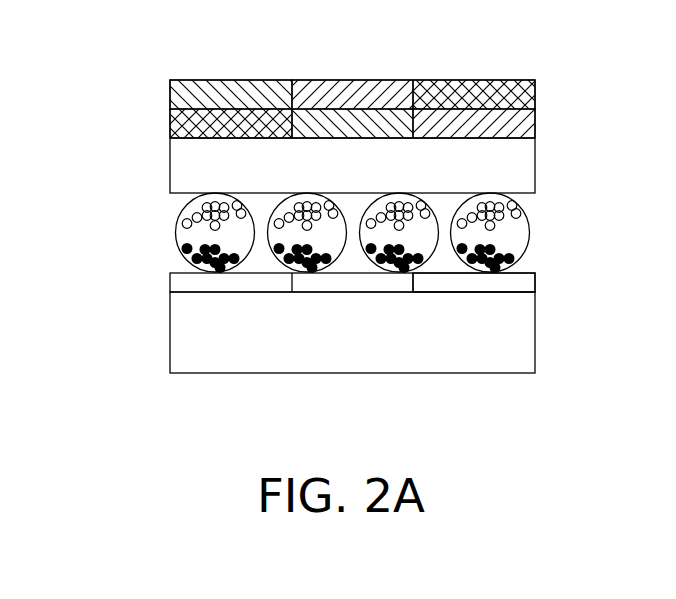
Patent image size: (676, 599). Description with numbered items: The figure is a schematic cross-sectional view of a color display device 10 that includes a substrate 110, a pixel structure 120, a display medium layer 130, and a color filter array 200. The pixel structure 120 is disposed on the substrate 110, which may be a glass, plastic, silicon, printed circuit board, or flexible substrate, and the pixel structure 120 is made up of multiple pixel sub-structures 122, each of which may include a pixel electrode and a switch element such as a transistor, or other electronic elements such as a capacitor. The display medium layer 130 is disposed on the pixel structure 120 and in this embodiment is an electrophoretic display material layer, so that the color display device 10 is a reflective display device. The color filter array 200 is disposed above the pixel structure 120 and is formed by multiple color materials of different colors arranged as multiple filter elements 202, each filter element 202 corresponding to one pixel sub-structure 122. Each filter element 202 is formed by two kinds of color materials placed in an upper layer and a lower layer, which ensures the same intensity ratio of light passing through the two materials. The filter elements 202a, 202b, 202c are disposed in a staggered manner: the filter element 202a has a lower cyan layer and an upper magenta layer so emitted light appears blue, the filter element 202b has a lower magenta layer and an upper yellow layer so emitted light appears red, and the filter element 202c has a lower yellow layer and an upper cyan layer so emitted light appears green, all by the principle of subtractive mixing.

The color display device 10 is at (355, 215).
The substrate 110 is at (208, 333).
The pixel structure 120 is at (356, 289).
The pixel sub-structure 122 is at (517, 282).
The display medium layer 130 is at (176, 226).
The color filter array 200 is at (311, 107).
The filter element 202 is at (357, 80).
The filter element 202a is at (236, 80).
The filter element 202b is at (353, 80).
The filter element 202c is at (482, 80).